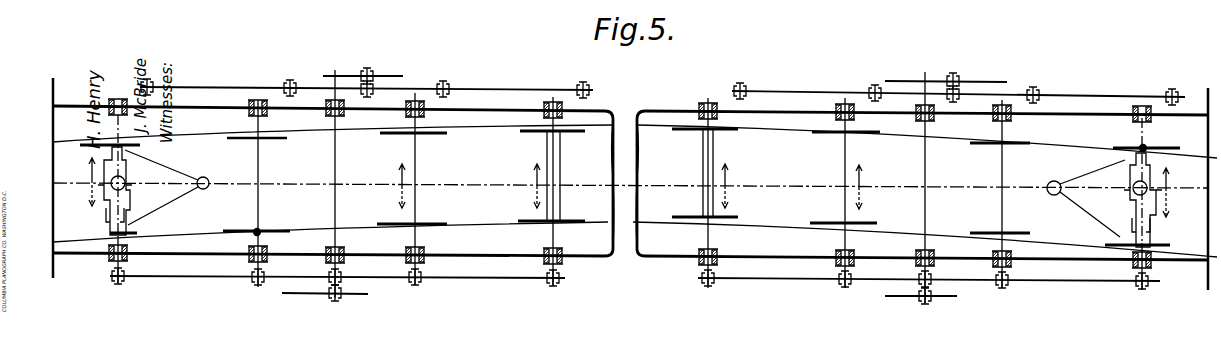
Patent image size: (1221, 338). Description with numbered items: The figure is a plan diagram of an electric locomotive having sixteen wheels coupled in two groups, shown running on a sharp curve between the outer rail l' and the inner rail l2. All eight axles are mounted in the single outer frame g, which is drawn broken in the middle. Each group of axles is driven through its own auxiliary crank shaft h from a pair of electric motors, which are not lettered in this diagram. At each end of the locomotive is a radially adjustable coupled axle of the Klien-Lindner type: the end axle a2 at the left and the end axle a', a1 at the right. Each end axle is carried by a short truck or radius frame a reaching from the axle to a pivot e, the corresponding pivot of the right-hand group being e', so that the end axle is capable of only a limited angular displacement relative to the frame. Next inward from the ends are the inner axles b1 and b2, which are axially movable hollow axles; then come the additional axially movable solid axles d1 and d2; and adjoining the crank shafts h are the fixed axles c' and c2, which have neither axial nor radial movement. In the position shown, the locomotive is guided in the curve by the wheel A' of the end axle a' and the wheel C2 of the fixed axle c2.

The outer frame g is at (75, 104).
The outer rail l' is at (635, 144).
The inner rail l2 is at (598, 218).
The end axle a2 is at (130, 168).
The pivot e is at (203, 169).
The truck or radius frame a is at (161, 187).
The fixed axle c2 is at (263, 203).
The wheel C2 is at (224, 233).
The auxiliary crank shaft h is at (340, 158).
The axially movable solid axle d2 is at (418, 167).
The axially movable hollow axle b2 is at (560, 166).
The axially movable hollow axle b1 is at (707, 154).
The axially movable solid axle d1 is at (843, 164).
The fixed axle c' is at (1003, 194).
The pivot e' is at (1039, 175).
The end axle a' is at (1091, 198).
The end axle a1 is at (1128, 177).
The wheel A' is at (1151, 134).